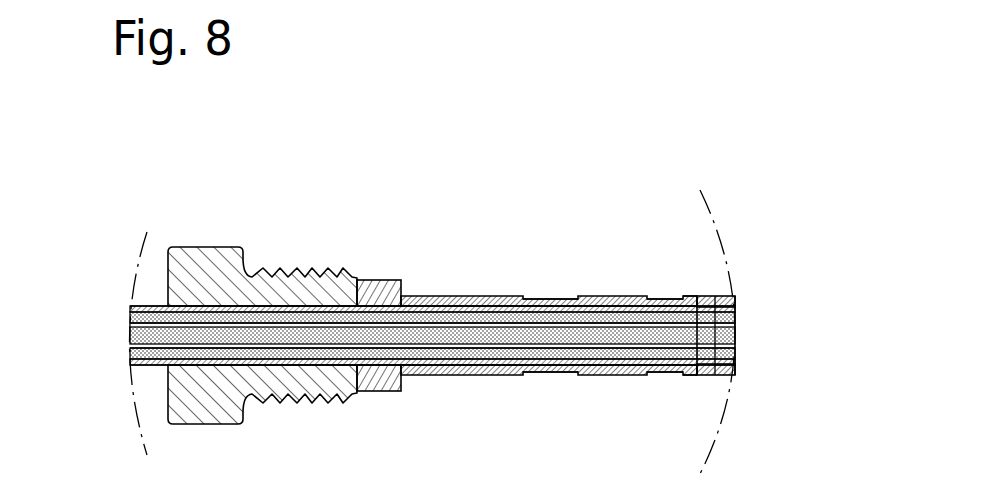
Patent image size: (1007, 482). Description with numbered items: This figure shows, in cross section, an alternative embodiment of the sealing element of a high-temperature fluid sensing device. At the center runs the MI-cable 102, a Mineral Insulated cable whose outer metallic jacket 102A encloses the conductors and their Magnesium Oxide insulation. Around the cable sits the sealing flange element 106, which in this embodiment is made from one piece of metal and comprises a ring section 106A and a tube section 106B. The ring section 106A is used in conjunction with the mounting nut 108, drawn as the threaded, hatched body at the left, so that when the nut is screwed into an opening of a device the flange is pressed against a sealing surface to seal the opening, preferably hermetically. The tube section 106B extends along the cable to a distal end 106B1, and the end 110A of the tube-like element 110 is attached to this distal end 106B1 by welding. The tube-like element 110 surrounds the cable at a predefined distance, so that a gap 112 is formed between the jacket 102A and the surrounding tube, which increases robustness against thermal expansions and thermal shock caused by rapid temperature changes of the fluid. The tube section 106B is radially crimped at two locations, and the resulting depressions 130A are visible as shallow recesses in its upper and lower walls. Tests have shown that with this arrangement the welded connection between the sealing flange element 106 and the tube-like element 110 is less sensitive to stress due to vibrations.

The MI-cable 102 is at (482, 344).
The outer metallic jacket 102A is at (735, 358).
The sealing flange element 106 is at (527, 345).
The ring section 106A is at (405, 260).
The tube section 106B is at (549, 345).
The distal end of the tube section 106B1 is at (690, 377).
The mounting nut 108 is at (217, 262).
The tube-like element 110 is at (751, 336).
The end of the tube-like element 110A is at (710, 295).
The gap 112 is at (598, 377).
The depressions 130A is at (552, 297).